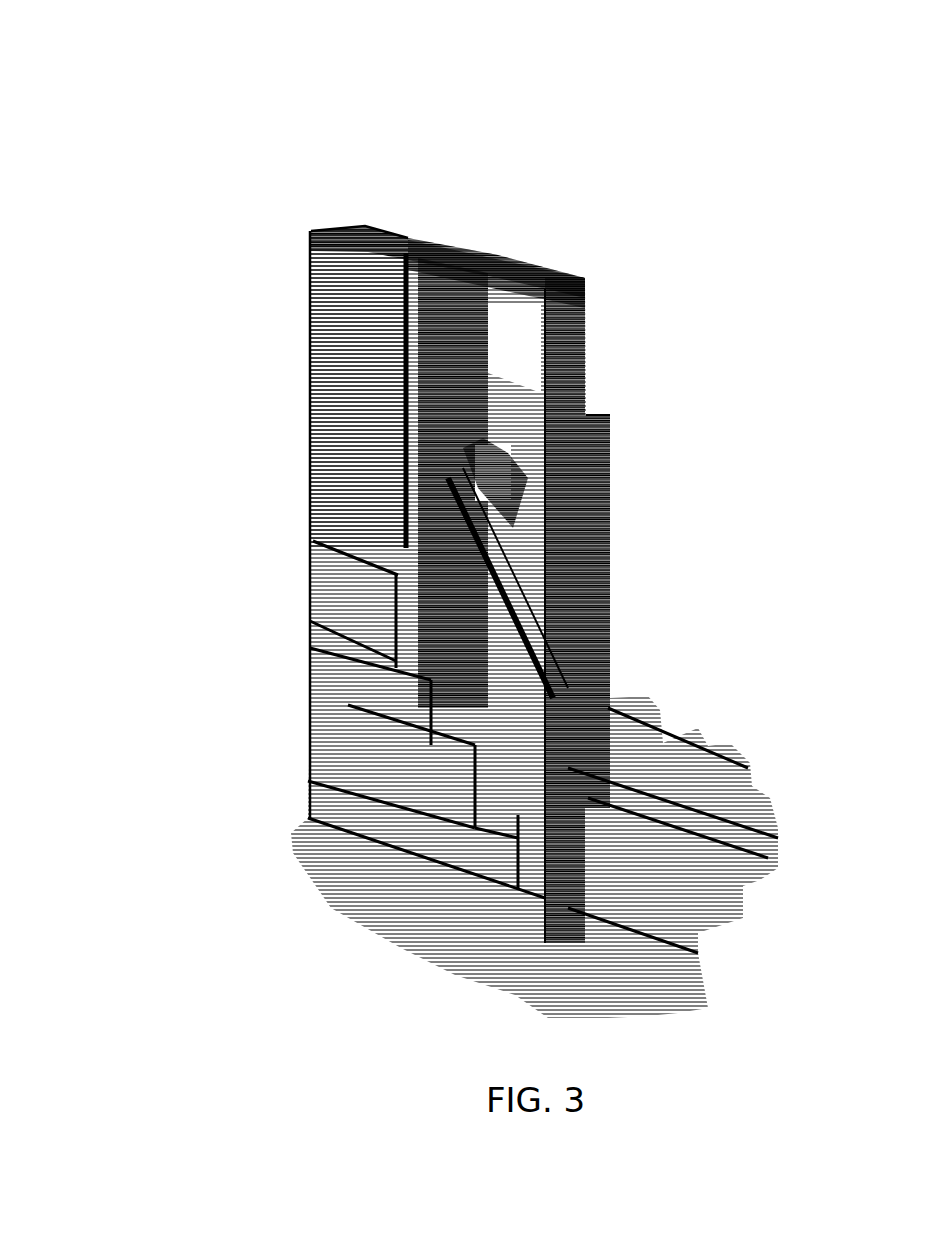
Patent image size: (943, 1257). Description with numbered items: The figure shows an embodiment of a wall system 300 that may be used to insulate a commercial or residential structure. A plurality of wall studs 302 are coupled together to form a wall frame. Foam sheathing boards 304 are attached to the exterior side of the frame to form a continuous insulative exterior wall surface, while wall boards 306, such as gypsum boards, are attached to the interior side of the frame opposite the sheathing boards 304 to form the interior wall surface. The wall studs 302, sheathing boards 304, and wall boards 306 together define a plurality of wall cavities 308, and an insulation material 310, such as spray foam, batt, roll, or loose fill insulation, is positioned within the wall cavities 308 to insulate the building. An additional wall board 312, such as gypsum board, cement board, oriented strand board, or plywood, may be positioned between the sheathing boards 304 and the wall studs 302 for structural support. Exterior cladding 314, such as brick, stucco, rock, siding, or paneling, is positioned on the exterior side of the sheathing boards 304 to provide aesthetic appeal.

The wall system 300 is at (92, 108).
The wall studs 302 is at (558, 368).
The sheathing boards 304 is at (343, 468).
The wall boards 306 is at (582, 600).
The wall cavities 308 is at (500, 325).
The insulation material 310 is at (510, 512).
The additional wall board 312 is at (522, 640).
The exterior cladding 314 is at (343, 695).